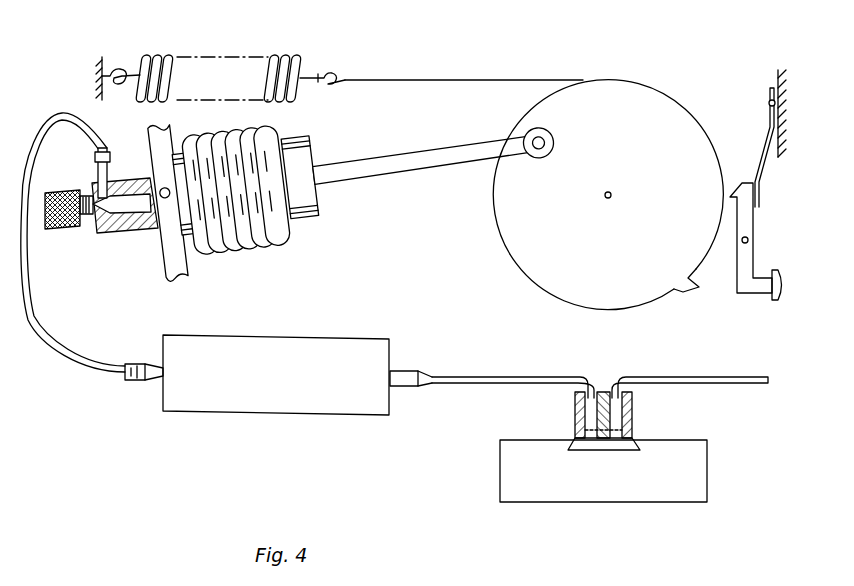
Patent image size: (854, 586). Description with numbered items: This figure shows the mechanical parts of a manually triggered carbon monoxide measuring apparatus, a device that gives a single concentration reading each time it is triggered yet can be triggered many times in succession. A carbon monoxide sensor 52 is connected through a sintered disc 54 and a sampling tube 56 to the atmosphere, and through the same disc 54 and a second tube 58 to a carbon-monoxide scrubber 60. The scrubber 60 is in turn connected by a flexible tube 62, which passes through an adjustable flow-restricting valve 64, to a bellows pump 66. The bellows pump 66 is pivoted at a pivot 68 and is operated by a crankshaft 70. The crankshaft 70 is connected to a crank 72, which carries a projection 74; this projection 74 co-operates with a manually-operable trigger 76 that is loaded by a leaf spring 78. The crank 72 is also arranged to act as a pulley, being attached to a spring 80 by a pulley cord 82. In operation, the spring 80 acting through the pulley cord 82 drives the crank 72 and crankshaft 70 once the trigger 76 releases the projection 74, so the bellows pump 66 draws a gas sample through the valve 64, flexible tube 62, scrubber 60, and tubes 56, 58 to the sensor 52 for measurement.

The carbon monoxide sensor 52 is at (670, 504).
The sintered disc 54 is at (634, 438).
The sampling tube 56 is at (736, 377).
The second tube 58 is at (508, 376).
The carbon-monoxide scrubber 60 is at (282, 416).
The flexible tube 62 is at (75, 366).
The adjustable flow-restricting valve 64 is at (88, 218).
The bellows pump 66 is at (262, 250).
The pivot 68 is at (162, 198).
The crankshaft 70 is at (408, 158).
The crank 72 is at (598, 312).
The projection 74 is at (695, 292).
The manually-operable trigger 76 is at (750, 224).
The leaf spring 78 is at (762, 155).
The spring 80 is at (295, 58).
The pulley cord 82 is at (471, 79).